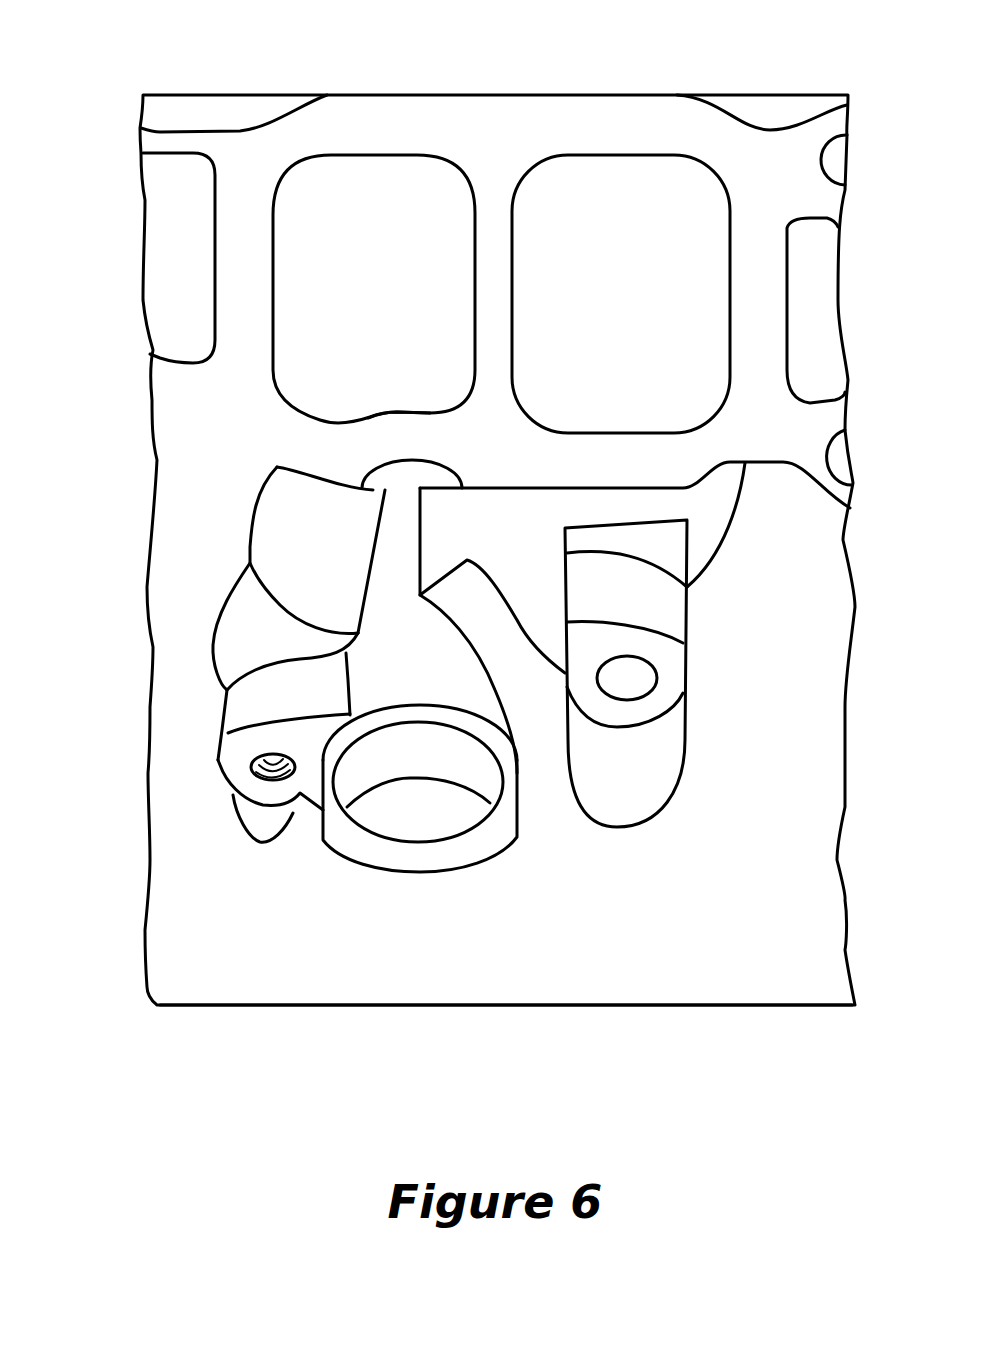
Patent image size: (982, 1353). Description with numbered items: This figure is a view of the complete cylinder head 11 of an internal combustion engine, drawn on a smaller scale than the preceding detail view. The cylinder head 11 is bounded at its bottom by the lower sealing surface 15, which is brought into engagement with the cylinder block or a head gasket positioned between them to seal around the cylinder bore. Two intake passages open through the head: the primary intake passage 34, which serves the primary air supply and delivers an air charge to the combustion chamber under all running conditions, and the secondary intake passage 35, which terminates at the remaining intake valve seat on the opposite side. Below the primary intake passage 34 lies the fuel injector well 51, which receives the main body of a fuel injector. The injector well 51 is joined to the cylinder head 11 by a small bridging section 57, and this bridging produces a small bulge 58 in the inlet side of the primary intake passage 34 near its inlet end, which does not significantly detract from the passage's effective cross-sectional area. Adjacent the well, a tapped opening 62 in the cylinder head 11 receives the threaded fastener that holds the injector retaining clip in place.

The cylinder head 11 is at (200, 923).
The lower sealing surface 15 is at (675, 1005).
The primary intake passage 34 is at (383, 170).
The secondary intake passage 35 is at (625, 213).
The bulge 58 is at (400, 412).
The bridging section 57 is at (397, 602).
The tapped openings 62 is at (262, 755).
The fuel injector well 51 is at (448, 831).